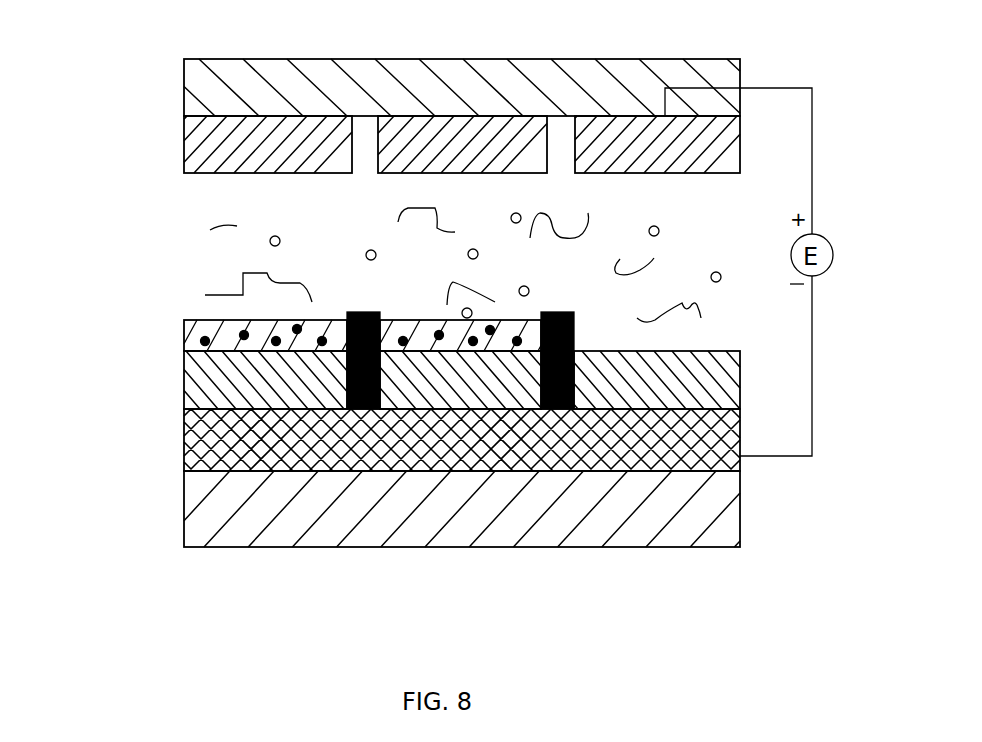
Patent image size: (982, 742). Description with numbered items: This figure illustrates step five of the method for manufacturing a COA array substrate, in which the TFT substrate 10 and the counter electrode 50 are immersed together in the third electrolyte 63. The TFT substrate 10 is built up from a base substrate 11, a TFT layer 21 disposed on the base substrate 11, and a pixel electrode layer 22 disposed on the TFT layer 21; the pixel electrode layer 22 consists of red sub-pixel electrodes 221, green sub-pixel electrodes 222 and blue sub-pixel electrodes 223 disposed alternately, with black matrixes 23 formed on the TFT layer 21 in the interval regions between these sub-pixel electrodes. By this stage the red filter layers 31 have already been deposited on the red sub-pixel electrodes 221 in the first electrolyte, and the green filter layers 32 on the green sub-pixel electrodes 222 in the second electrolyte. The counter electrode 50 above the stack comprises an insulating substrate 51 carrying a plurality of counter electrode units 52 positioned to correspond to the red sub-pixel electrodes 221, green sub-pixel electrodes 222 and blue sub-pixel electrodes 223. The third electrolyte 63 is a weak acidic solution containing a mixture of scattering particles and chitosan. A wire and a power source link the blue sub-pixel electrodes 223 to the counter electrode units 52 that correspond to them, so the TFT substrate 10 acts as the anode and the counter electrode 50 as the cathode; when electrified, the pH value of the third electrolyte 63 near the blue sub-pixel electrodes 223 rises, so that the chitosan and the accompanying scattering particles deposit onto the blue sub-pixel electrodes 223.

The TFT substrate 10 is at (394, 468).
The base substrate 11 is at (420, 509).
The TFT layer 21 is at (190, 448).
The pixel electrode layer 22 is at (420, 490).
The red sub-pixel electrodes 221 is at (243, 381).
The green sub-pixel electrodes 222 is at (438, 381).
The blue sub-pixel electrodes 223 is at (652, 381).
The black matrixes 23 is at (557, 405).
The red filter layers 31 is at (203, 343).
The green filter layers 32 is at (425, 320).
The counter electrode 50 is at (399, 100).
The insulating substrate 51 is at (184, 73).
The counter electrode units 52 is at (425, 136).
The third electrolyte 63 is at (243, 274).